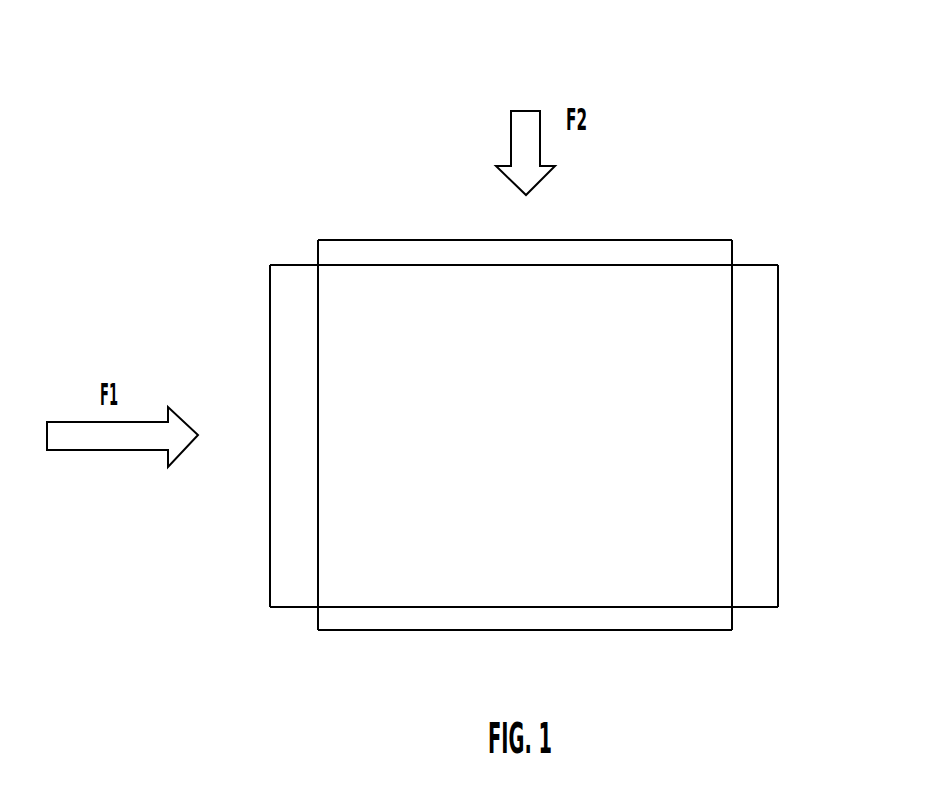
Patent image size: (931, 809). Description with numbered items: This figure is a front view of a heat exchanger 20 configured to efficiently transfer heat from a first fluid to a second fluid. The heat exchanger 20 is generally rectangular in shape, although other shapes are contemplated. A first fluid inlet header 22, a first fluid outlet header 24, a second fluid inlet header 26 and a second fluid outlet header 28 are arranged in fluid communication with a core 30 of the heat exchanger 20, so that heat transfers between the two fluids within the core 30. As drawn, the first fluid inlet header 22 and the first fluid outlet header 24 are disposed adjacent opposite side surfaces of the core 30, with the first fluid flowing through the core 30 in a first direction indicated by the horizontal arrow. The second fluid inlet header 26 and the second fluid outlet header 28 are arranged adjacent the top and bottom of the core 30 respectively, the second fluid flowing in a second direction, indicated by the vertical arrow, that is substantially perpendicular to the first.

The heat exchanger 20 is at (190, 92).
The first fluid inlet header 22 is at (295, 580).
The first fluid outlet header 24 is at (763, 315).
The second fluid inlet header 26 is at (373, 250).
The second fluid outlet header 28 is at (673, 615).
The core 30 is at (605, 352).